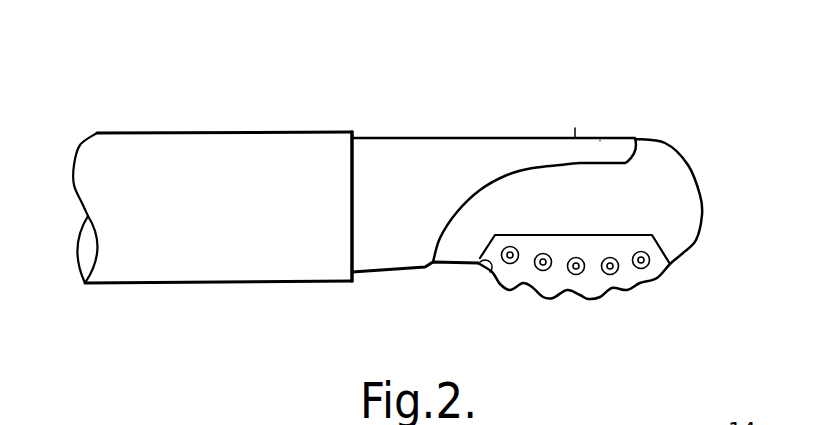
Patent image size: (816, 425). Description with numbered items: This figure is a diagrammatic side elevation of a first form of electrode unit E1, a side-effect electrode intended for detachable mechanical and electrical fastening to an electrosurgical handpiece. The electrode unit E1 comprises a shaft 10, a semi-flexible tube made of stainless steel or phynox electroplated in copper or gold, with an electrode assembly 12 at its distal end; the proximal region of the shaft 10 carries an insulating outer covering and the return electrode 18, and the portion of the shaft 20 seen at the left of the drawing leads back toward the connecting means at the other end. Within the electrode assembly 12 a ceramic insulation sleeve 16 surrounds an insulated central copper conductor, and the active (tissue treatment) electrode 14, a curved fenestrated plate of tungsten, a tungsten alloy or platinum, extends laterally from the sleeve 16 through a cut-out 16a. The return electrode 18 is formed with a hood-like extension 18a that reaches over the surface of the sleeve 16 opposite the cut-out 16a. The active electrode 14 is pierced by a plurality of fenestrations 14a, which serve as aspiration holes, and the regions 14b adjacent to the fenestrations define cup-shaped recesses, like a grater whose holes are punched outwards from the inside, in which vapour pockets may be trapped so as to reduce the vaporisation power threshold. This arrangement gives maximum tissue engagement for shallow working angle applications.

The shaft 10 is at (82, 257).
The shaft end / sheath 20 is at (173, 132).
The electrode unit E1 is at (312, 128).
The return electrode 18 is at (395, 162).
The hood-like extension 18a is at (575, 138).
The electrode assembly 12 is at (615, 132).
The ceramic insulation sleeve 16 is at (662, 173).
The cut-out 16a is at (490, 263).
The active electrode 14 is at (622, 247).
The fenestrations 14a is at (543, 252).
The regions adjacent to the fenestrations 14b is at (530, 287).